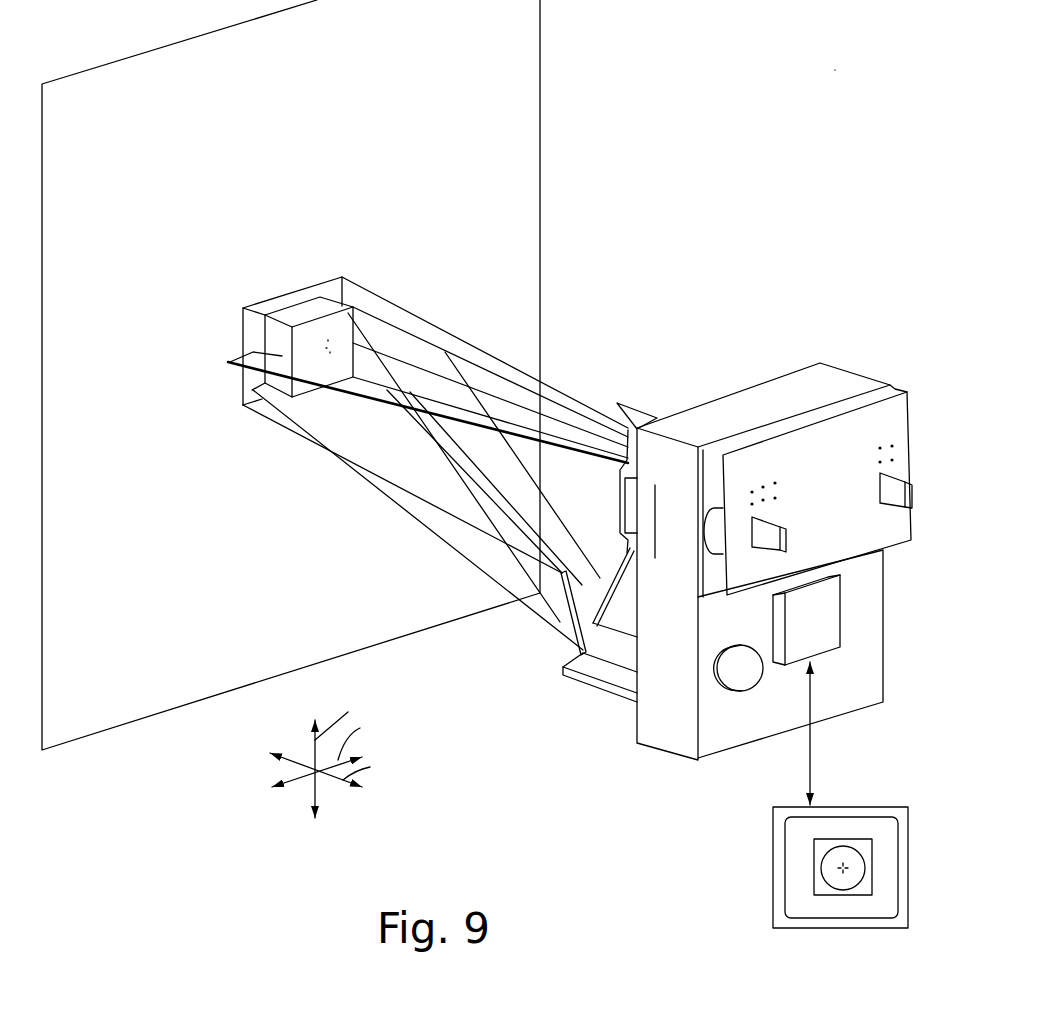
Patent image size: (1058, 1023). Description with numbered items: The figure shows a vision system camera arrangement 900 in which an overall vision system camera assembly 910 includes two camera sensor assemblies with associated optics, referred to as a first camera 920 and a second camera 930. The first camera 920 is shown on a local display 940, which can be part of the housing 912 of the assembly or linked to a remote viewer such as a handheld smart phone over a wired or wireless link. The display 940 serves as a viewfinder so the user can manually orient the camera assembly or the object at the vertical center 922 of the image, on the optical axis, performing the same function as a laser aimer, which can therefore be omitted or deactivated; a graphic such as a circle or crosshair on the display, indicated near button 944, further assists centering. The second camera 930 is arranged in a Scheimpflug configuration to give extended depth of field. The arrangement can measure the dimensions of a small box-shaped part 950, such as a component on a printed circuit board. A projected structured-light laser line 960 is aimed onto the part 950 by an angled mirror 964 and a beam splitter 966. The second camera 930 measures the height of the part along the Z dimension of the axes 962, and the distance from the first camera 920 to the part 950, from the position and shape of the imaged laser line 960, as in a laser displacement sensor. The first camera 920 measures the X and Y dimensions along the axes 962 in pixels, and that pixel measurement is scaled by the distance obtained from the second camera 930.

The vision system camera arrangement 900 is at (817, 107).
The vision system camera assembly 910 is at (845, 365).
The housing 912 is at (877, 607).
The first camera 920 is at (604, 412).
The center of the image 922 is at (322, 345).
The second camera 930 is at (625, 658).
The local display 940 is at (775, 832).
The button 944 is at (823, 875).
The part/object 950 is at (328, 308).
The laser fan/line 960 is at (230, 362).
The axes 962 is at (298, 797).
The angled mirror 964 is at (592, 637).
The beam splitter 966 is at (635, 407).